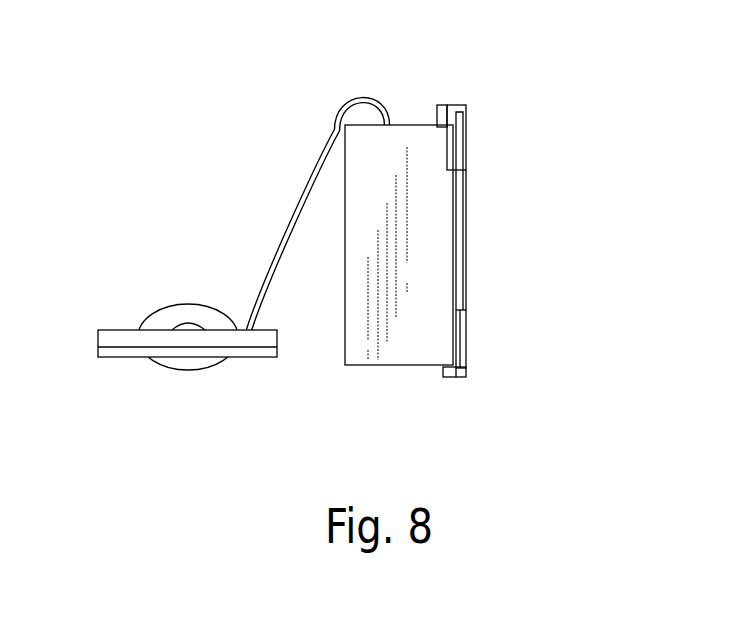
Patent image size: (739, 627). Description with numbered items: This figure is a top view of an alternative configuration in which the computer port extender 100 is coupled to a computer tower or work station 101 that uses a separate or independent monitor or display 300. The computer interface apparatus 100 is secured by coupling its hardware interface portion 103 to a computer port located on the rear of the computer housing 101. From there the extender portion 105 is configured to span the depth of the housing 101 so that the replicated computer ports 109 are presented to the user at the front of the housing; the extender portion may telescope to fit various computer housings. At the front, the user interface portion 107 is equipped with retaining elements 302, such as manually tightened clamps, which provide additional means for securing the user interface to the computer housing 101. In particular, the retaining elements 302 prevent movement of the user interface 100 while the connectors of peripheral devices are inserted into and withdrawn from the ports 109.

The computer port extender 100 is at (530, 145).
The computer tower 101 is at (353, 365).
The hardware interface portion 103 is at (438, 104).
The extender portion 105 is at (477, 238).
The user interface portion 107 is at (468, 372).
The replicated computer ports 109 is at (456, 379).
The monitor 300 is at (122, 330).
The retaining elements 302 is at (440, 368).